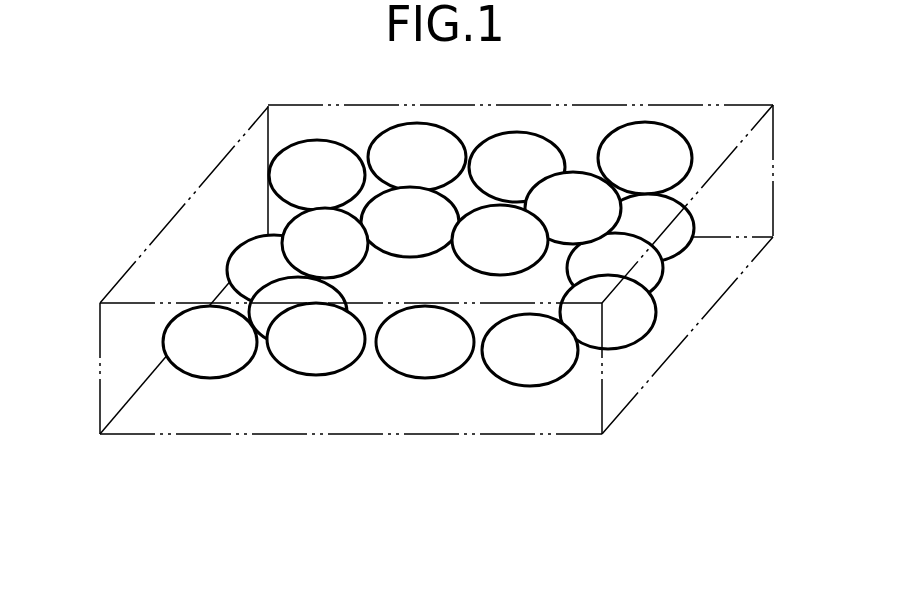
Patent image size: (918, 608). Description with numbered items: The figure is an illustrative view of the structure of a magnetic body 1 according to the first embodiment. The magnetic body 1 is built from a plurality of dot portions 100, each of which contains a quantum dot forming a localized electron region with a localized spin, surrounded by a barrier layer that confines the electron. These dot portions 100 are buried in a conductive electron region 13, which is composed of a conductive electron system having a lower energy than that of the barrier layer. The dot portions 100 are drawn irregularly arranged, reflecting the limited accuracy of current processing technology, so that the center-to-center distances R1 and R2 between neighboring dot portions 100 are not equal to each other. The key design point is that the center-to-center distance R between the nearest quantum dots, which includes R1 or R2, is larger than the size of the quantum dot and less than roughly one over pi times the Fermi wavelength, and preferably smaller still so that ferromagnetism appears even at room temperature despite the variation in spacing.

The magnetic body 1 is at (132, 160).
The conductive electron region 13 is at (178, 410).
The dot portion 100 is at (537, 375).
The center-to-center distance R is at (317, 338).
The center-to-center distance R1 is at (530, 350).
The center-to-center distance R2 is at (291, 291).